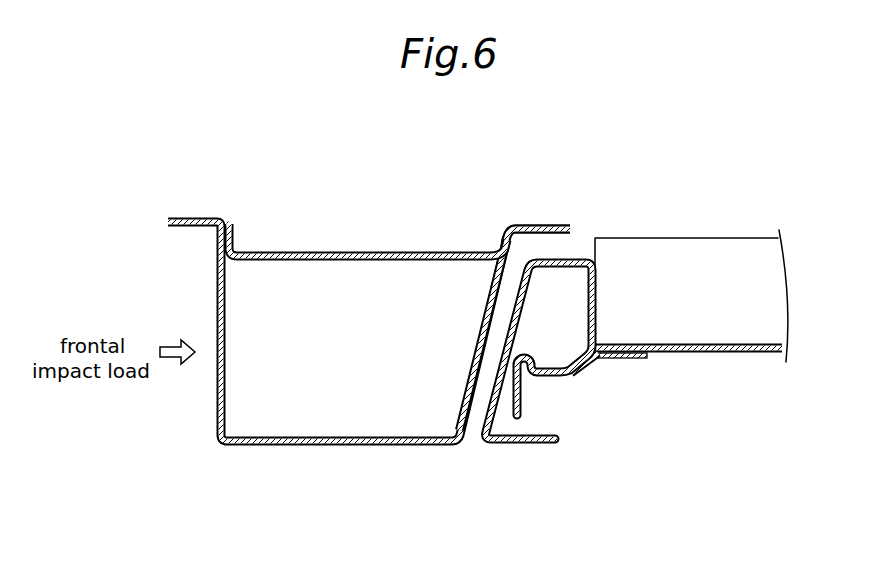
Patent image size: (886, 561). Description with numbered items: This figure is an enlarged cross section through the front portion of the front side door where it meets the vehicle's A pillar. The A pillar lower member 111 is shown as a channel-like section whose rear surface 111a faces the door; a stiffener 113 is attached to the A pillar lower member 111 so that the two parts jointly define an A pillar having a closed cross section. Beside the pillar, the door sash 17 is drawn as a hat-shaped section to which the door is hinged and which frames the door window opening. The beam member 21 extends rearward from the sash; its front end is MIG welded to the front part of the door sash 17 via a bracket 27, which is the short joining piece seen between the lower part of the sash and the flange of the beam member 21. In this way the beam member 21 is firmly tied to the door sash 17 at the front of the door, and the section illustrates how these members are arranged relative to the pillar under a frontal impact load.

The A pillar lower member 111 is at (312, 447).
The rear surface of the A pillar lower member 111a is at (474, 407).
The stiffener 113 is at (293, 251).
The door sash 17 is at (568, 258).
The beam member 21 is at (692, 262).
The bracket 27 is at (568, 375).